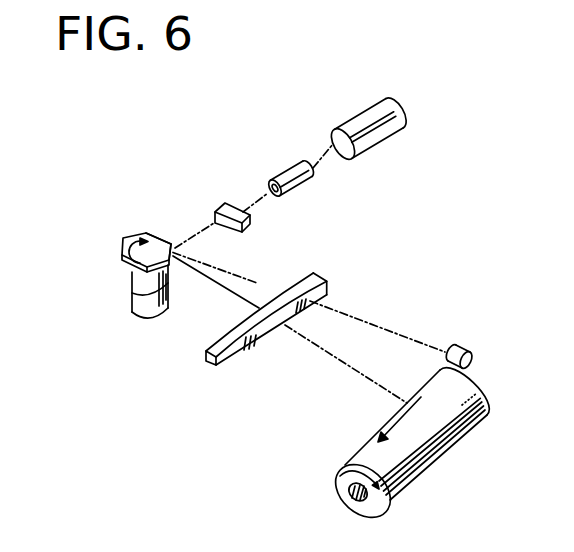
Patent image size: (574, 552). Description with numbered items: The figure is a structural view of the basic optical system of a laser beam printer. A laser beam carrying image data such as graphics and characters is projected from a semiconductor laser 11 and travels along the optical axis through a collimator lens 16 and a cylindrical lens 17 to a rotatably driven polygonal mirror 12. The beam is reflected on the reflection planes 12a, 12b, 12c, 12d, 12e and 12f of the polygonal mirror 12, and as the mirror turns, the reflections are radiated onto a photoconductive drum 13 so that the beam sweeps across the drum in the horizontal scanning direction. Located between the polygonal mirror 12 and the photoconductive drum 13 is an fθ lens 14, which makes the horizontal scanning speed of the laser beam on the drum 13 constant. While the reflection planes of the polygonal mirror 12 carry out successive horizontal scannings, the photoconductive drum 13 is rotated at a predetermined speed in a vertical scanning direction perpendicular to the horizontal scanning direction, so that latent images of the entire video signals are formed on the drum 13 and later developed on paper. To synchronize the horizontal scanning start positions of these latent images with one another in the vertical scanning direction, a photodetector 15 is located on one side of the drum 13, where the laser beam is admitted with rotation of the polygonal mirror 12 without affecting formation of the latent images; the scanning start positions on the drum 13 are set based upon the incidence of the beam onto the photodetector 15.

The semiconductor laser 11 is at (363, 123).
The polygonal mirror 12 is at (112, 226).
The reflection plane 12a is at (123, 273).
The reflection plane 12b is at (121, 256).
The reflection plane 12c is at (131, 236).
The reflection plane 12d is at (153, 235).
The reflection plane 12e is at (176, 252).
The reflection plane 12f is at (166, 270).
The photoconductive drum 13 is at (438, 436).
The fθ lens 14 is at (253, 354).
The photodetector 15 is at (463, 348).
The collimator lens 16 is at (286, 170).
The cylindrical lens 17 is at (252, 223).